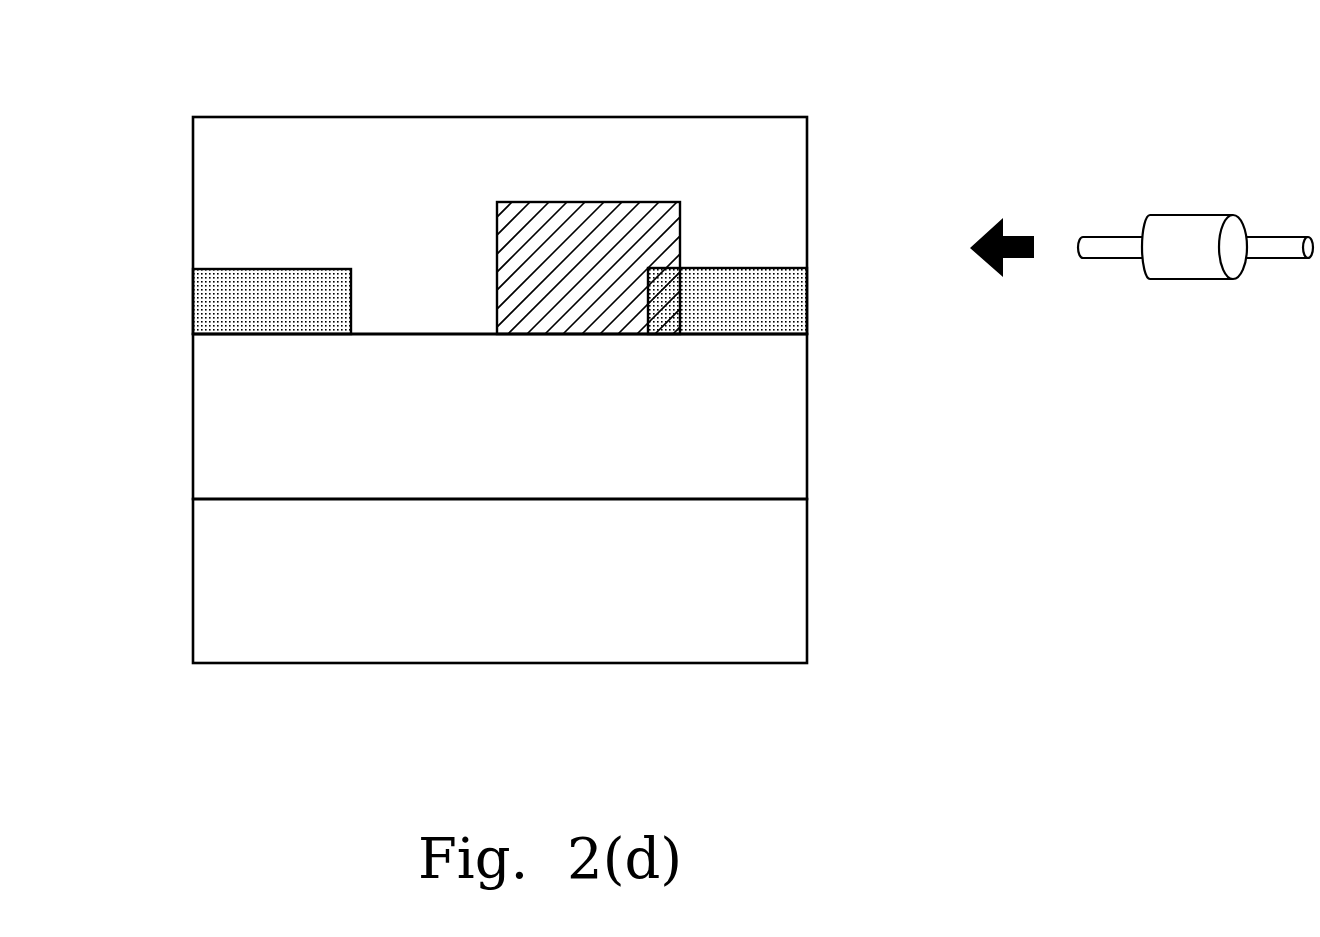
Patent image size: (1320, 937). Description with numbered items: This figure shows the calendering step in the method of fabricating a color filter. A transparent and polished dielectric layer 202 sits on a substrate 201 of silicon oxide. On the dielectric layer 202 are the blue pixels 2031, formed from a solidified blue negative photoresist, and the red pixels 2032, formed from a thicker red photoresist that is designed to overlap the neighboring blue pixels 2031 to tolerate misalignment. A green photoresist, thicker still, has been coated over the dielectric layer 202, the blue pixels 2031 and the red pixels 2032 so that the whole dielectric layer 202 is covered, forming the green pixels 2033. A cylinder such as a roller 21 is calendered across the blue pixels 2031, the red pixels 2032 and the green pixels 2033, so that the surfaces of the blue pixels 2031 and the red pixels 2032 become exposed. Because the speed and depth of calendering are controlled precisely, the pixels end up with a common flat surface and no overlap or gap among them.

The roller 21 is at (1182, 235).
The substrate 201 is at (766, 610).
The dielectric layer 202 is at (766, 447).
The blue pixel 2031 is at (222, 312).
The red pixel 2032 is at (577, 247).
The green pixel 2033 is at (447, 150).